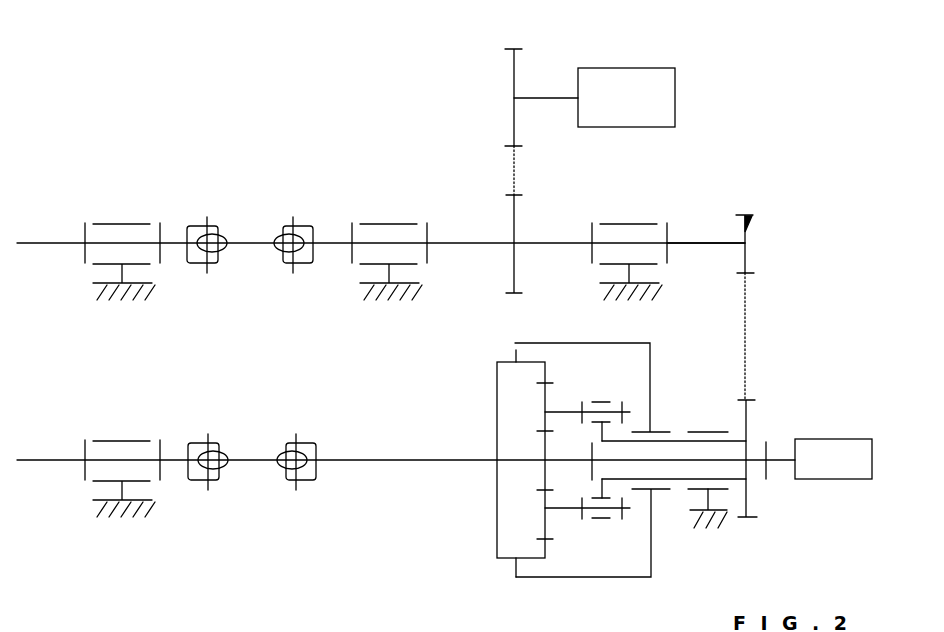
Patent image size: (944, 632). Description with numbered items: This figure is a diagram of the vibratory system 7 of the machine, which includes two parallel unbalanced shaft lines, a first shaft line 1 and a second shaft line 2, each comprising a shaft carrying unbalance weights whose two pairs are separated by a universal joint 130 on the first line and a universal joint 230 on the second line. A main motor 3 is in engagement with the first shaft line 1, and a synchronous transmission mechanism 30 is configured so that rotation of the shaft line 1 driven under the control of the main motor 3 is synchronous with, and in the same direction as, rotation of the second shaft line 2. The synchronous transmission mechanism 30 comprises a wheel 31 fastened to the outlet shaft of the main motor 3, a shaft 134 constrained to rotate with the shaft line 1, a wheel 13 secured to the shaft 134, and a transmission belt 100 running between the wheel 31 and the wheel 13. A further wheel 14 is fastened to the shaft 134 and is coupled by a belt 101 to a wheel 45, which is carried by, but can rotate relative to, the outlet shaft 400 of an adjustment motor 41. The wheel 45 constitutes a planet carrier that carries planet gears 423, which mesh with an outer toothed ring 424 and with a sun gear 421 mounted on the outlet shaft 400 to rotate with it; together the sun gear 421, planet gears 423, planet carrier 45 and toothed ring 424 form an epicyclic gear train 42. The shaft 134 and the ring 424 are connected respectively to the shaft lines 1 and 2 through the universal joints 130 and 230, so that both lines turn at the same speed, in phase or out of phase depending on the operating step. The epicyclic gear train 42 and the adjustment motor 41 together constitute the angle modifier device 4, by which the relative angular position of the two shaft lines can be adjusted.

The first unbalanced shaft line 1 is at (76, 204).
The second unbalanced shaft line 2 is at (66, 428).
The main motor 3 is at (640, 79).
The angle modifier device 4 is at (871, 418).
The vibratory system 7 is at (817, 93).
The wheel 13 is at (514, 222).
The wheel 14 is at (749, 217).
The synchronous transmission mechanism 30 is at (712, 134).
The wheel 31 is at (514, 80).
The adjustment motor 41 is at (800, 440).
The epicyclic gear train 42 is at (470, 392).
The planet carrier 45 is at (749, 424).
The transmission belt 100 is at (514, 170).
The belt 101 is at (746, 318).
The universal joint 130 is at (303, 228).
The shaft 134 is at (677, 240).
The universal joint 230 is at (255, 460).
The outlet shaft 400 is at (737, 462).
The sun gear 421 is at (545, 466).
The planet gears 423 is at (545, 388).
The toothed ring 424 is at (545, 546).